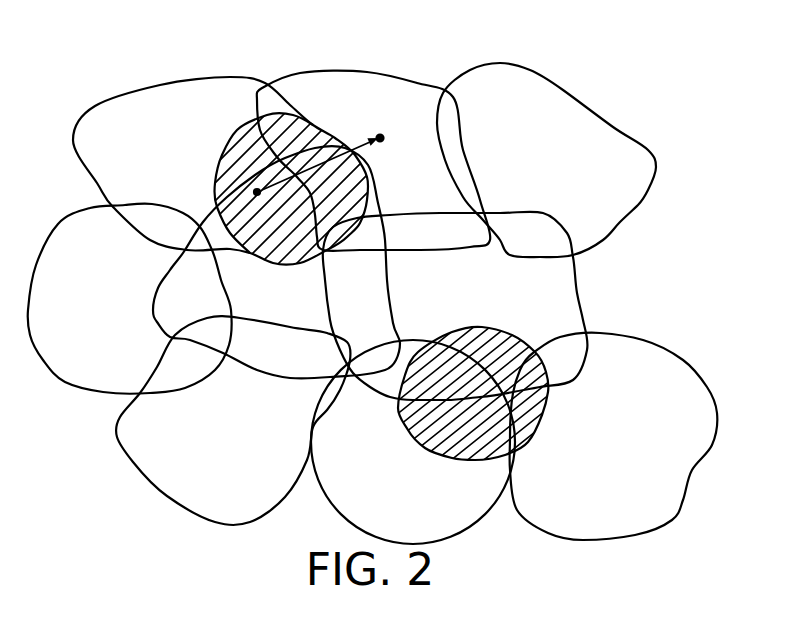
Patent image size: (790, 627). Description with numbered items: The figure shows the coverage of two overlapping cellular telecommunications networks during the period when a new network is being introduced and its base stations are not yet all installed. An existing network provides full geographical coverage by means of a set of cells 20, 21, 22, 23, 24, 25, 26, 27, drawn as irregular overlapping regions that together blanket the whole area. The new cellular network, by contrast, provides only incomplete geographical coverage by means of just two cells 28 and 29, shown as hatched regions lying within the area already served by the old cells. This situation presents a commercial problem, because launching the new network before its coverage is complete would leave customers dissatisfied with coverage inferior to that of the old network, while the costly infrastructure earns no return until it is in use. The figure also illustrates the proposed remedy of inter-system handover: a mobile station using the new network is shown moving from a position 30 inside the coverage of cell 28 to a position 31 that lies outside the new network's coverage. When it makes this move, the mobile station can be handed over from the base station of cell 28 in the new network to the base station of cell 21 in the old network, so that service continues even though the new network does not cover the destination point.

The cell 20 is at (152, 146).
The cell 21 is at (365, 118).
The cell 22 is at (532, 173).
The cell 23 is at (104, 312).
The cell 24 is at (444, 305).
The cell 25 is at (217, 444).
The cell 26 is at (390, 492).
The cell 27 is at (600, 445).
The cell 28 is at (310, 114).
The cell 29 is at (526, 332).
The position 30 is at (256, 192).
The position 31 is at (381, 139).